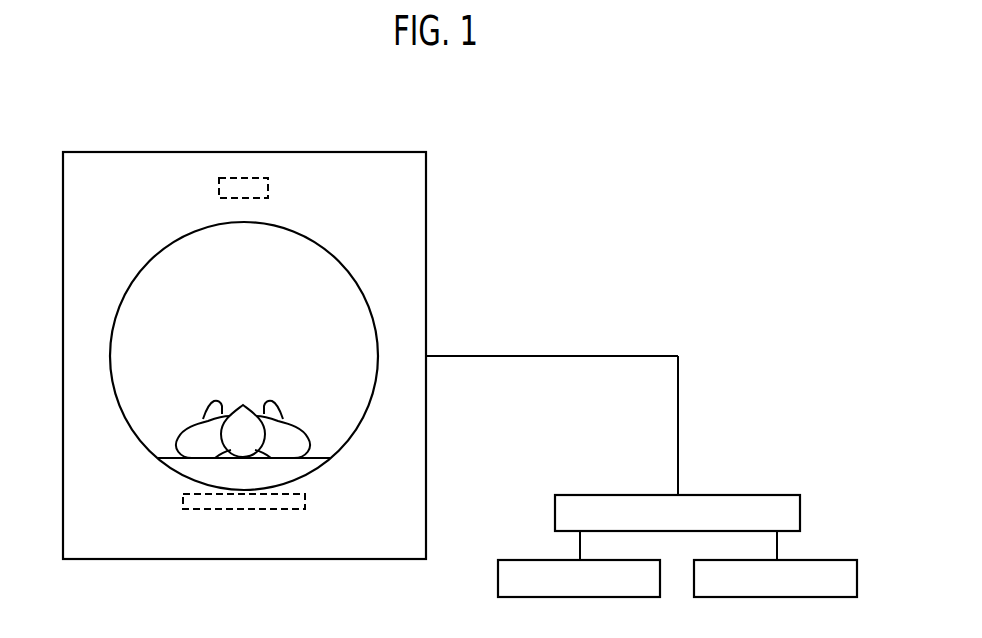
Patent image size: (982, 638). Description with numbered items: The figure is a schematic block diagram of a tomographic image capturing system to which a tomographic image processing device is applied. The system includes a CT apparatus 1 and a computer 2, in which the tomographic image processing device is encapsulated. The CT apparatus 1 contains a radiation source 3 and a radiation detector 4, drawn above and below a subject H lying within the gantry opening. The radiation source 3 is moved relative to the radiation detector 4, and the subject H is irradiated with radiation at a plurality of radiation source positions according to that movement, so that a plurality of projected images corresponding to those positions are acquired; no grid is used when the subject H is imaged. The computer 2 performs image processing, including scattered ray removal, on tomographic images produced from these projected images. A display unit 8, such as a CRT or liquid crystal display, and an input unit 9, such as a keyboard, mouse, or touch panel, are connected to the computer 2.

The CT apparatus 1 is at (150, 139).
The computer 2 is at (800, 507).
The radiation source 3 is at (252, 178).
The radiation detector 4 is at (280, 509).
The display unit 8 is at (618, 597).
The input unit 9 is at (815, 597).
The subject H is at (262, 400).